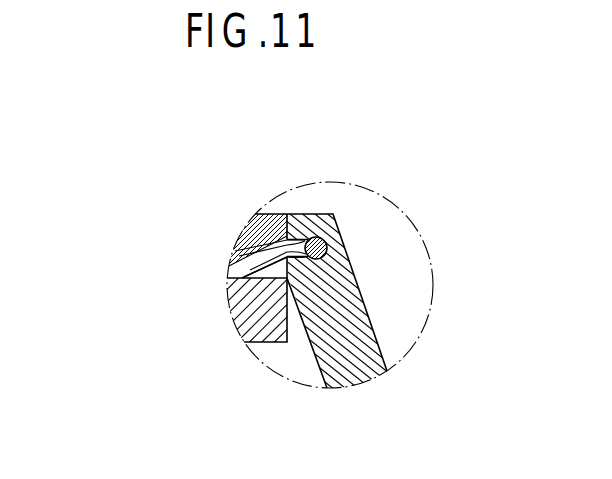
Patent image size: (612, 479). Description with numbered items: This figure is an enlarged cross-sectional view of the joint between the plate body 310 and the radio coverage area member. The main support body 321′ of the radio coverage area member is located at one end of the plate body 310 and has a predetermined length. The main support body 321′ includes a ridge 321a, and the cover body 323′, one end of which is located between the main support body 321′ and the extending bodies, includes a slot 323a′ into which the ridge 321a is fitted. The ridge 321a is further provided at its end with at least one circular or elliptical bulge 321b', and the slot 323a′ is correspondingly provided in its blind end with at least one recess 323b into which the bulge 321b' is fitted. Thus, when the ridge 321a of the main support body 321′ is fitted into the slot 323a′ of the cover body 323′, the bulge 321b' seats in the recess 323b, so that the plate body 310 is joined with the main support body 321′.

The plate body 310 is at (247, 310).
The main support body 321′ is at (250, 252).
The ridge 321a is at (298, 232).
The bulge 321b' is at (356, 188).
The cover body 323′ is at (352, 353).
The slot 323a′ is at (327, 249).
The recess 323b is at (327, 252).